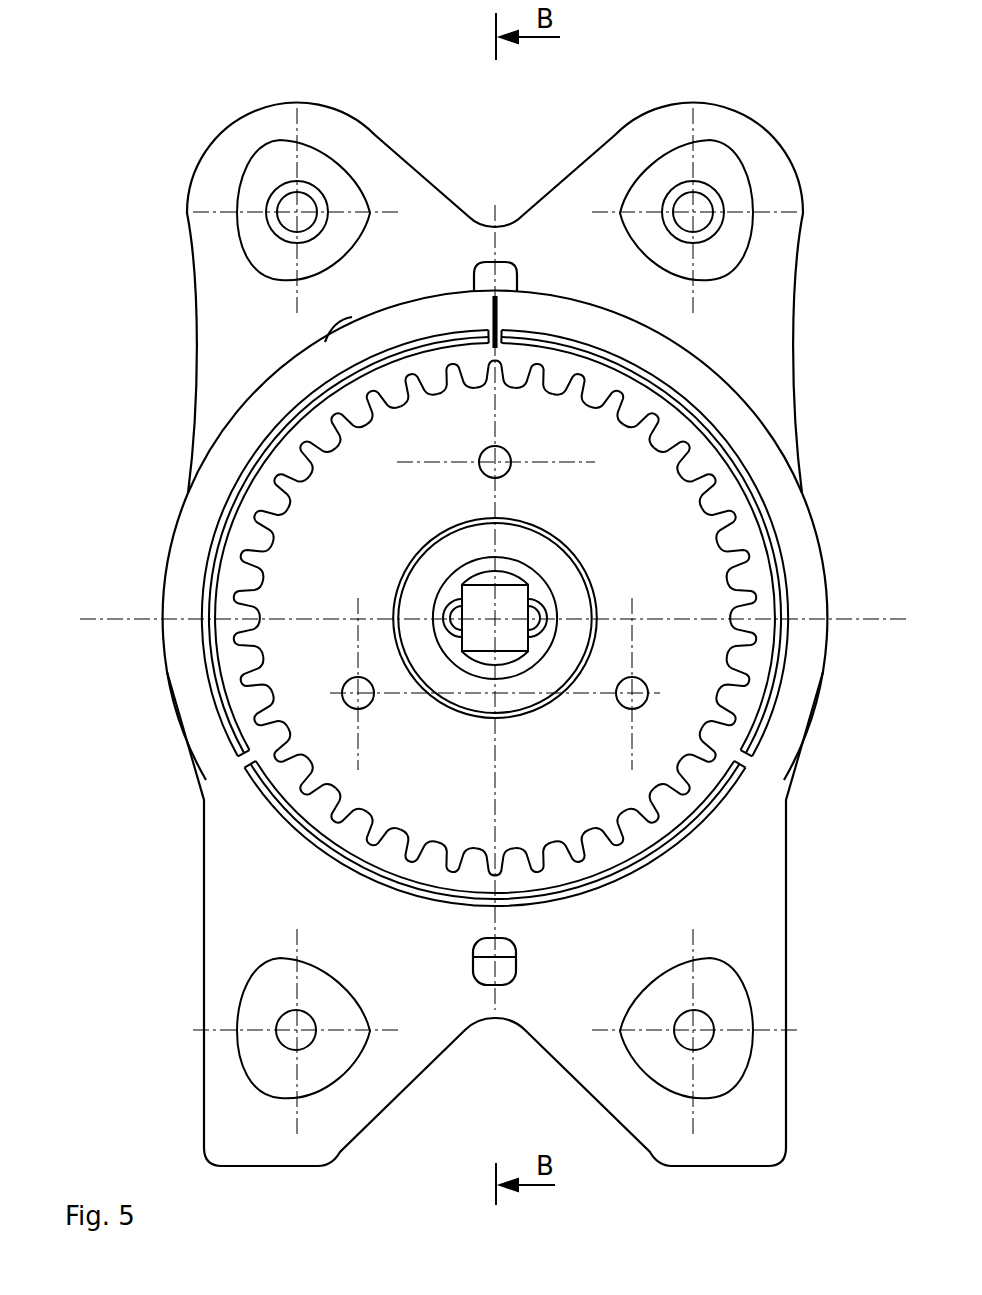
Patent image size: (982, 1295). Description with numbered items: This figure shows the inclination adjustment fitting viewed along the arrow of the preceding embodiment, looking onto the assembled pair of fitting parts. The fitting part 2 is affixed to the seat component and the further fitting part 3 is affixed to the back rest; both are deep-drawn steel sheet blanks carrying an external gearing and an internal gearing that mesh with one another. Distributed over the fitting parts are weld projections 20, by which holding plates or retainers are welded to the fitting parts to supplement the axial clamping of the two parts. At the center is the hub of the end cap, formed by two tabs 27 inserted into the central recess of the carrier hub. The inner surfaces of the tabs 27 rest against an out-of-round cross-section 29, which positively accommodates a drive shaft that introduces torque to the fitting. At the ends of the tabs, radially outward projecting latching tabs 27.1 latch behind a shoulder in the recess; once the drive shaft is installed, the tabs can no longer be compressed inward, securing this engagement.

The fitting part 2 is at (775, 893).
The fitting part 3 is at (780, 342).
The weld projections 20 is at (735, 1060).
The tabs 27 is at (458, 640).
The latching tabs 27.1 is at (543, 625).
The out-of-round cross-section 29 is at (512, 640).